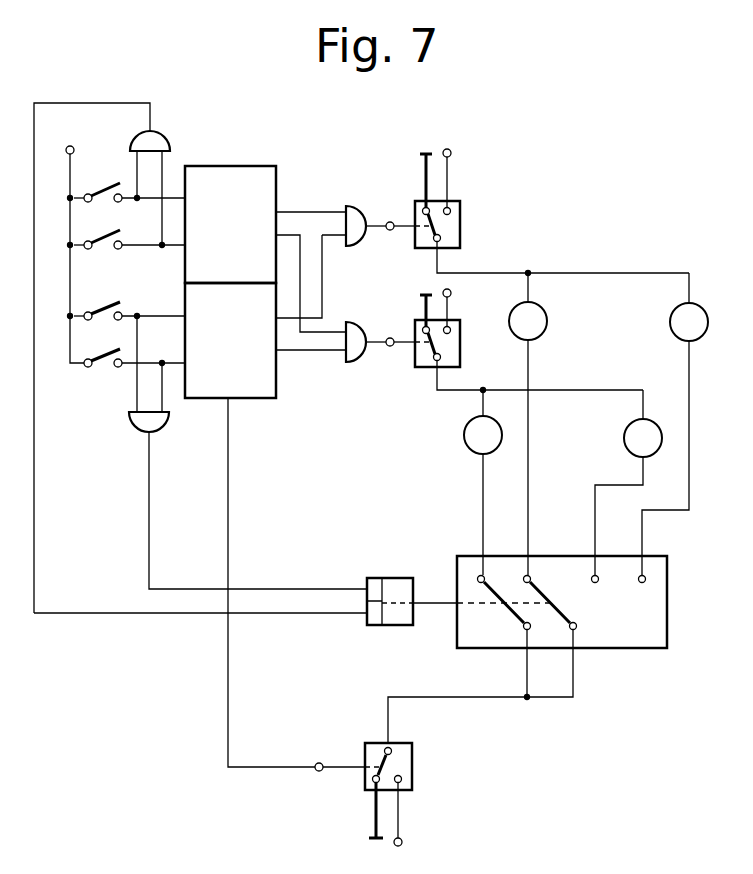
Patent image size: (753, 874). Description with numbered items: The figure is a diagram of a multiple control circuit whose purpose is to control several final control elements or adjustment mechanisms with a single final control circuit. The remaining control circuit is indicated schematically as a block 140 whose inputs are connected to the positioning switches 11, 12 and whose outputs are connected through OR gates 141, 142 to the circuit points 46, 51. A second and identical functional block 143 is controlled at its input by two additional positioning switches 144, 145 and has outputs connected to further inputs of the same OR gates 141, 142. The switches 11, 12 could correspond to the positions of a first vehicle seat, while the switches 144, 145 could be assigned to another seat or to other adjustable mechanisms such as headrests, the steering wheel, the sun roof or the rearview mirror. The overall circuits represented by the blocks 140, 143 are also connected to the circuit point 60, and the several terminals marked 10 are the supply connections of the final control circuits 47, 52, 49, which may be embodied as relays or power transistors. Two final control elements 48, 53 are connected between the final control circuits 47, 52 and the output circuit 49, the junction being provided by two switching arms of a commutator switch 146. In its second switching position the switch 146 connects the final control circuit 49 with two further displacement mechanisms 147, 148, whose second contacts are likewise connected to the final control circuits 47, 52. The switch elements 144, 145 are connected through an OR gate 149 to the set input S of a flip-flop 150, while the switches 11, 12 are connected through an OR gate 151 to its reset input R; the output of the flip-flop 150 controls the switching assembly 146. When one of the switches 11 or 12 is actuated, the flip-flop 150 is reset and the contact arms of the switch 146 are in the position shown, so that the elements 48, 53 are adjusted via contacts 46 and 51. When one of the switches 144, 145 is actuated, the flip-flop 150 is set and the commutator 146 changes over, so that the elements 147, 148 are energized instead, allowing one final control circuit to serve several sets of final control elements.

The voltage source terminal 10 is at (70, 146).
The positioning switch 11 is at (108, 158).
The positioning switch 12 is at (99, 220).
The circuit point 46 is at (390, 222).
The final control circuit 47 is at (462, 222).
The final control element 48 is at (540, 320).
The final control circuit 49 is at (402, 762).
The circuit point 51 is at (390, 338).
The final control circuit 52 is at (462, 346).
The final control element 53 is at (468, 434).
The circuit point 60 is at (319, 763).
The block 140 is at (232, 178).
The OR gate 141 is at (352, 214).
The OR gate 142 is at (353, 332).
The functional block 143 is at (248, 384).
The positioning switch 144 is at (108, 310).
The positioning switch 145 is at (101, 366).
The commutator switch 146 is at (625, 630).
The displacement mechanism 147 is at (680, 322).
The displacement mechanism 148 is at (633, 428).
The OR gate 149 is at (134, 425).
The flip-flop 150 is at (396, 585).
The OR gate 151 is at (152, 142).